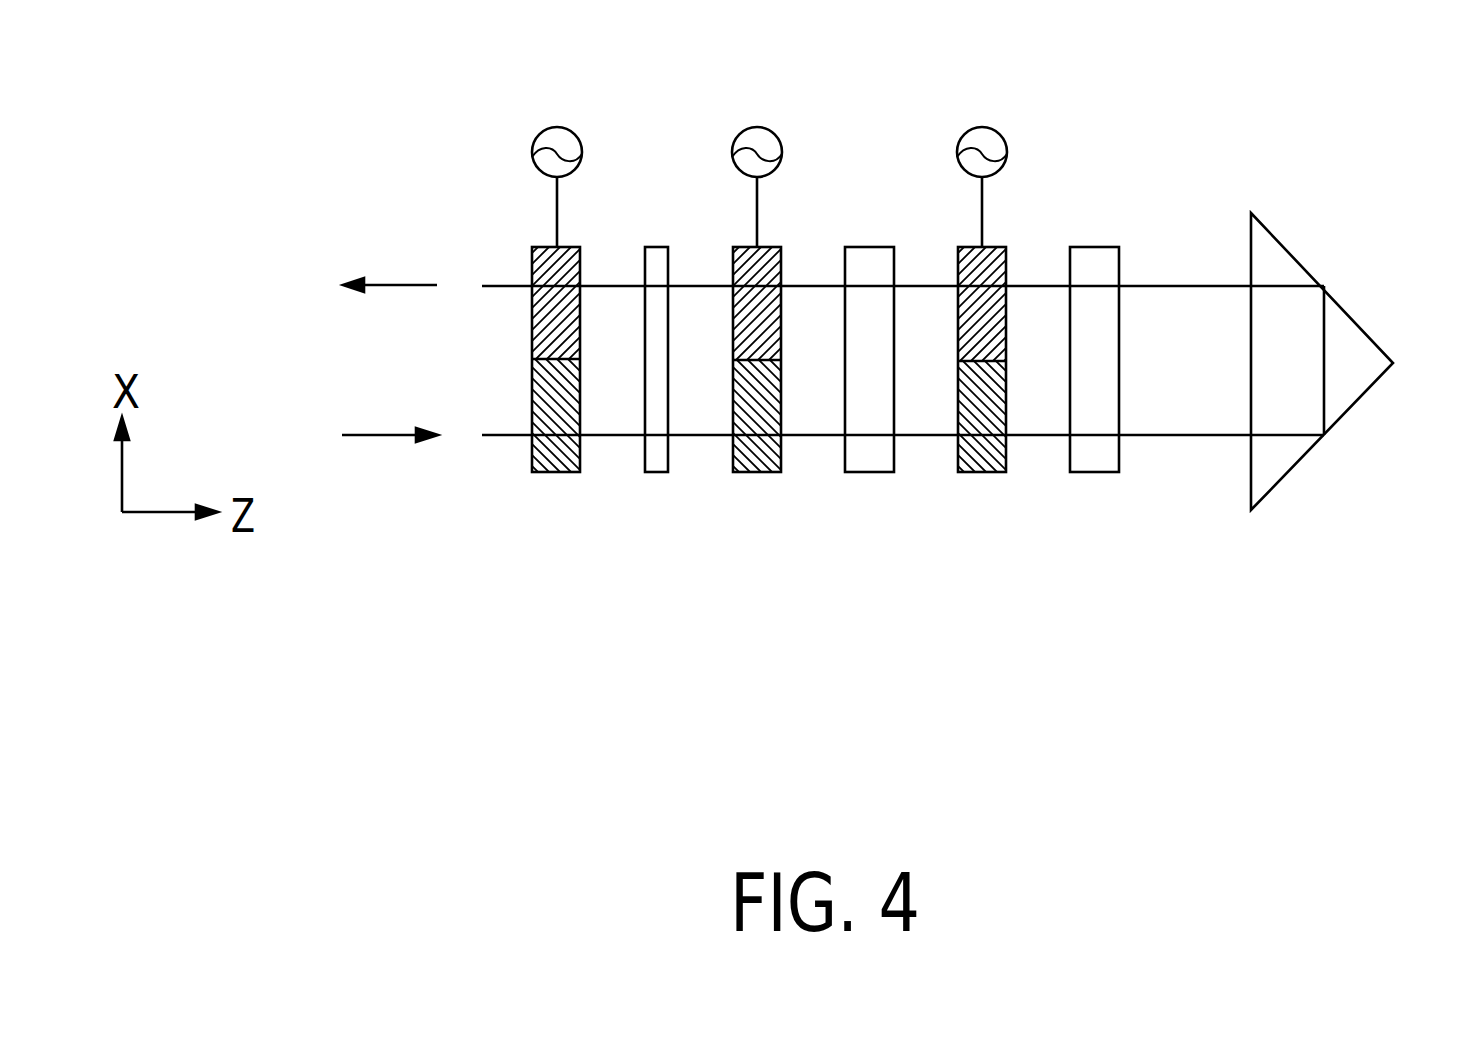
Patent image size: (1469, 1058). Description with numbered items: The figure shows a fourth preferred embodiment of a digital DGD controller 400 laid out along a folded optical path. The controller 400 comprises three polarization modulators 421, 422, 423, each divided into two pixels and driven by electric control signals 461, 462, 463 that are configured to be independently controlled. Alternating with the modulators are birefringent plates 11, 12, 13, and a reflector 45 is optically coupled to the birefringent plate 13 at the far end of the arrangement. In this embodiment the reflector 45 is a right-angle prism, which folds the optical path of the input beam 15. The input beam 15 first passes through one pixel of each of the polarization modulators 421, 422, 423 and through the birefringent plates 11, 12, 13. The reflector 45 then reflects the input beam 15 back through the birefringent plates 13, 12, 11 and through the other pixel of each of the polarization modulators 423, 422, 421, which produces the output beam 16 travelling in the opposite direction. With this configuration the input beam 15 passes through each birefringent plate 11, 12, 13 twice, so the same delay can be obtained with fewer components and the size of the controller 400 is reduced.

The digital DGD controller 400 is at (853, 805).
The birefringent plate 11 is at (654, 246).
The birefringent plate 12 is at (868, 246).
The birefringent plate 13 is at (1094, 246).
The input beam 15 is at (375, 434).
The output beam 16 is at (393, 284).
The reflector 45 is at (1370, 331).
The polarization modulator 421 is at (558, 474).
The polarization modulator 422 is at (757, 474).
The polarization modulator 423 is at (983, 474).
The electric control signal 461 is at (546, 128).
The electric control signal 462 is at (746, 128).
The electric control signal 463 is at (971, 128).